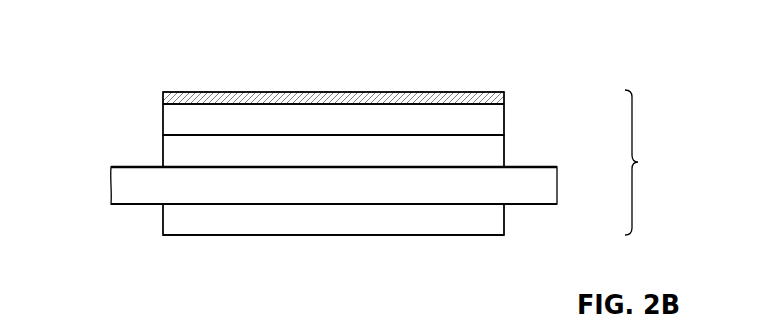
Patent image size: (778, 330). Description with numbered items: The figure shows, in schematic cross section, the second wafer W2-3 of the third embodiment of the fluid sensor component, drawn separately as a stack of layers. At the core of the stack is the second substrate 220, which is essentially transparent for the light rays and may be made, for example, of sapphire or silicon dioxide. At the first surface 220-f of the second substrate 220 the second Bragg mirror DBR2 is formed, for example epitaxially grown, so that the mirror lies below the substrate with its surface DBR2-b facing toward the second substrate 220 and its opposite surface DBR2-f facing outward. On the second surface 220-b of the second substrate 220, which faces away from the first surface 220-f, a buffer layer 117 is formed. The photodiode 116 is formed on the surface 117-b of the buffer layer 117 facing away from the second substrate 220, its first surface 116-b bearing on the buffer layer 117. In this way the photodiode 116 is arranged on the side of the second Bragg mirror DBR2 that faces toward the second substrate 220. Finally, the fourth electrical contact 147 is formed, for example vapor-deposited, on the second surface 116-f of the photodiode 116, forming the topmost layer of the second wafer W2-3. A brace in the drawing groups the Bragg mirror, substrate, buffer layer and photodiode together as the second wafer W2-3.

The fourth electrical contact 147 is at (446, 92).
The photodiode 116 is at (490, 120).
The buffer layer 117 is at (490, 150).
The second substrate 220 is at (522, 186).
The second Bragg mirror DBR2 is at (490, 225).
The second surface of the photodiode 116-f is at (238, 104).
The surface of the buffer layer 117-b is at (312, 134).
The first surface of the photodiode 116-b is at (363, 136).
The second surface of the second substrate 220-b is at (183, 164).
The surface of the second Bragg mirror DBR2-b is at (183, 202).
The first surface of the second substrate 220-f is at (270, 205).
The front surface of the second Bragg mirror DBR2-f is at (205, 236).
The second wafer W2-3 is at (654, 162).